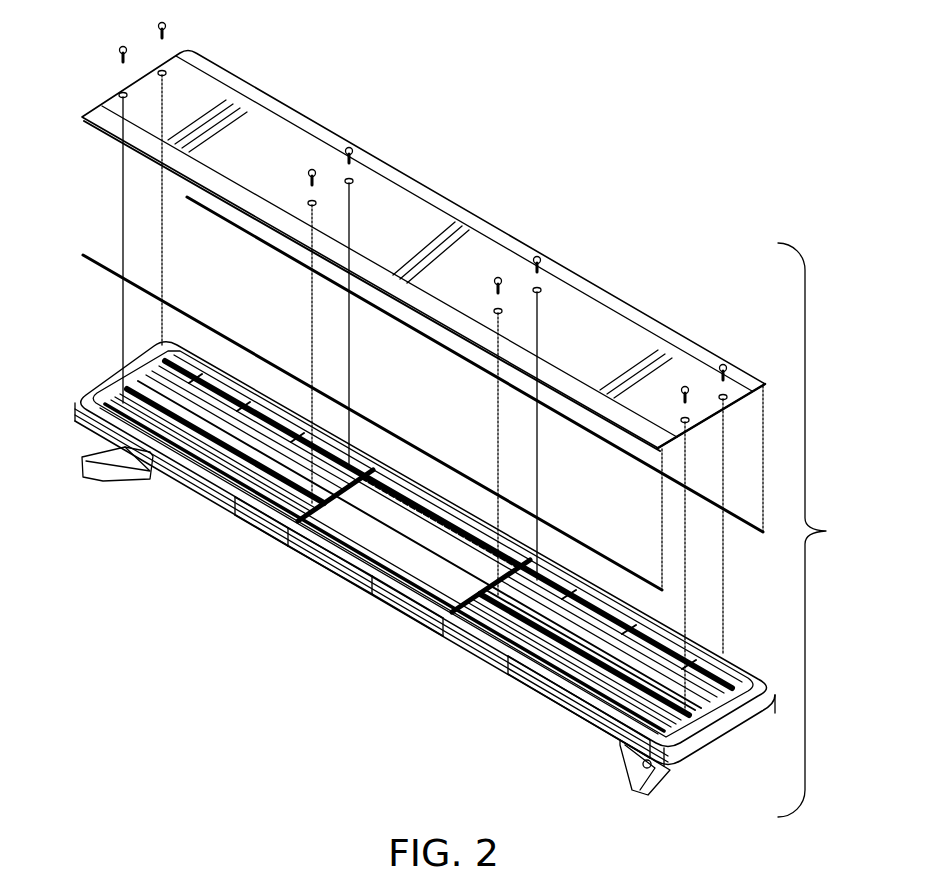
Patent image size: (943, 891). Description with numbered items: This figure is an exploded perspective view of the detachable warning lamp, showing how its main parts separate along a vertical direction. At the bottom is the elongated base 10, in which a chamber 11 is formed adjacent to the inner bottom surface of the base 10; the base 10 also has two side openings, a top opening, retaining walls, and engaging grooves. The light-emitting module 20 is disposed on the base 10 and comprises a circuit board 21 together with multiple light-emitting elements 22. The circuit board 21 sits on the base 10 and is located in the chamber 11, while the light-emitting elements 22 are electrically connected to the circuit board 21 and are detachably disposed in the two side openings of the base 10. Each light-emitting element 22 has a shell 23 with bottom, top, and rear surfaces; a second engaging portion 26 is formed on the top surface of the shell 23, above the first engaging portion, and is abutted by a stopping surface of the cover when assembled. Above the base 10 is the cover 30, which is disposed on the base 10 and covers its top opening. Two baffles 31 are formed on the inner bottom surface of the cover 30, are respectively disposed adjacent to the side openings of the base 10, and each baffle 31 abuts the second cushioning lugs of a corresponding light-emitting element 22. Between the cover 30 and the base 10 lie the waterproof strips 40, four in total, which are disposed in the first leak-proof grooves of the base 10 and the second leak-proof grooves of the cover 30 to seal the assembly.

The base 10 is at (722, 738).
The chamber 11 is at (600, 662).
The light-emitting module 20 is at (311, 564).
The circuit board 21 is at (380, 543).
The light-emitting elements 22 is at (405, 620).
The shell 23 is at (483, 650).
The second engaging portion 26 is at (630, 720).
The cover 30 is at (612, 330).
The baffles 31 is at (748, 398).
The waterproof strips 40 is at (743, 520).